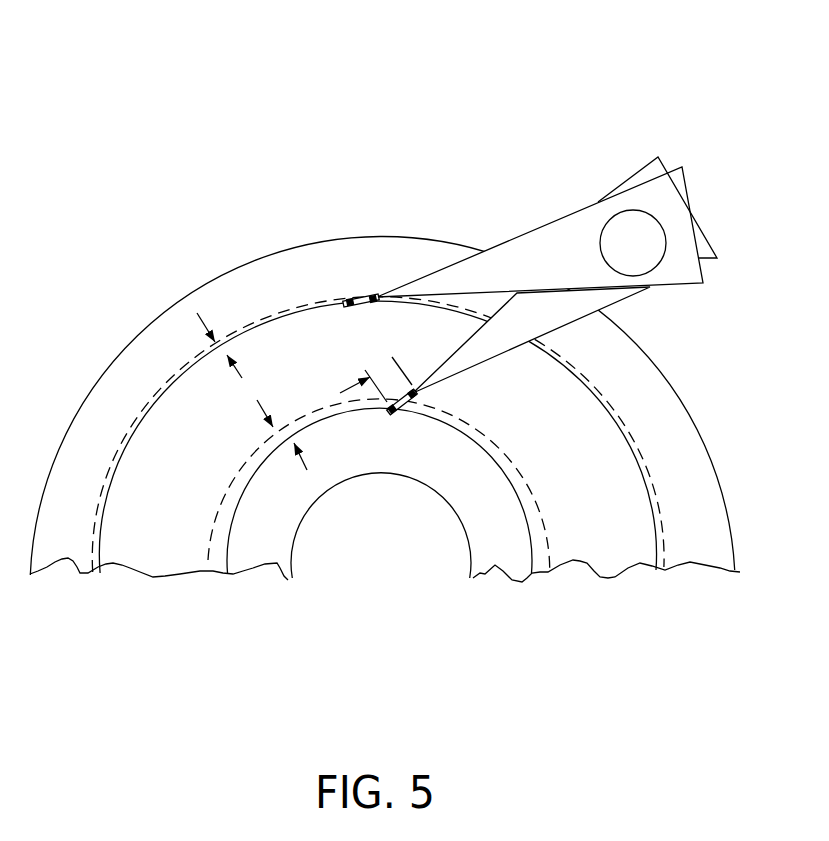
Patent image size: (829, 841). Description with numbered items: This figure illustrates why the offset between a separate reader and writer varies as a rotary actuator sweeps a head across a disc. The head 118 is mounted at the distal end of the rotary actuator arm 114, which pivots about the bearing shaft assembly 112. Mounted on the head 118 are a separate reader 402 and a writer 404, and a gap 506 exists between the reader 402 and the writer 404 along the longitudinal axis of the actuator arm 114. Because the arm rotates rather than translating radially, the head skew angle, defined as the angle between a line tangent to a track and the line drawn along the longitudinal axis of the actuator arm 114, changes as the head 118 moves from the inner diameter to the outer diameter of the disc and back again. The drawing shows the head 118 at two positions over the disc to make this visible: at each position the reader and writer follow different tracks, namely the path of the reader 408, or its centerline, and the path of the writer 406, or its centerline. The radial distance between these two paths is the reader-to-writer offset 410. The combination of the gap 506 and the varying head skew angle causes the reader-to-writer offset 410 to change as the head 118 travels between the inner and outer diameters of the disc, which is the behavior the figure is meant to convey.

The rotary actuator arm 114 is at (602, 203).
The bearing shaft assembly 112 is at (633, 244).
The reader 402 is at (375, 297).
The writer 404 is at (347, 300).
The head 118 is at (370, 298).
The reader-to-writer offset 410 is at (213, 347).
The gap 506 is at (397, 362).
The path of the writer 406 is at (100, 548).
The path of the reader 408 is at (96, 560).